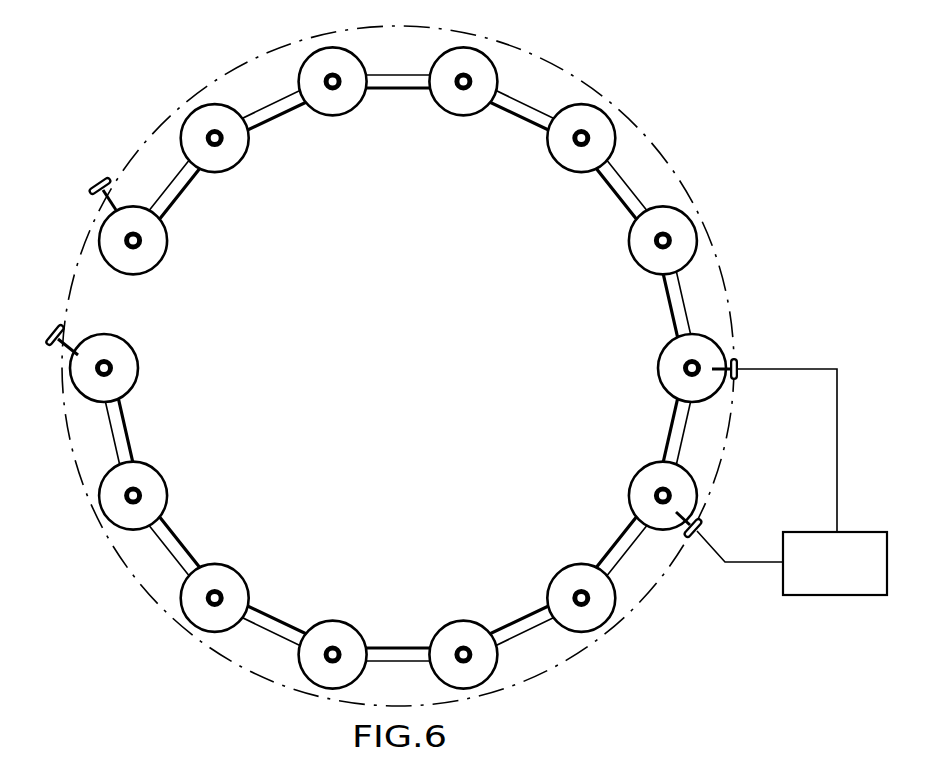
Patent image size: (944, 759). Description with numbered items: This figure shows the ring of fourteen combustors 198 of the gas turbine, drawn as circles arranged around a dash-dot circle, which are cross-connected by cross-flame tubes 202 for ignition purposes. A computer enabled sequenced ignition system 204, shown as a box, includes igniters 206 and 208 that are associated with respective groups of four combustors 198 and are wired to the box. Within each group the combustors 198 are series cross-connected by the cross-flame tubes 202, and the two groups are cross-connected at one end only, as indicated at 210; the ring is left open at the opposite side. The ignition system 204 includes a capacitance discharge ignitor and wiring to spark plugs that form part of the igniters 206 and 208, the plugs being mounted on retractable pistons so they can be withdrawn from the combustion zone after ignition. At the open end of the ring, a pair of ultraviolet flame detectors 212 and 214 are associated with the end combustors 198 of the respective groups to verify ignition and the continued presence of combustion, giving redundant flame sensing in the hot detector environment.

The combustors 198 is at (299, 90).
The cross-flame tubes 202 is at (289, 117).
The sequenced ignition system 204 is at (793, 531).
The igniter 206 is at (736, 359).
The igniter 208 is at (686, 536).
The cross-connection at one end 210 is at (670, 423).
The ultraviolet flame detector 212 is at (53, 329).
The ultraviolet flame detector 214 is at (99, 186).